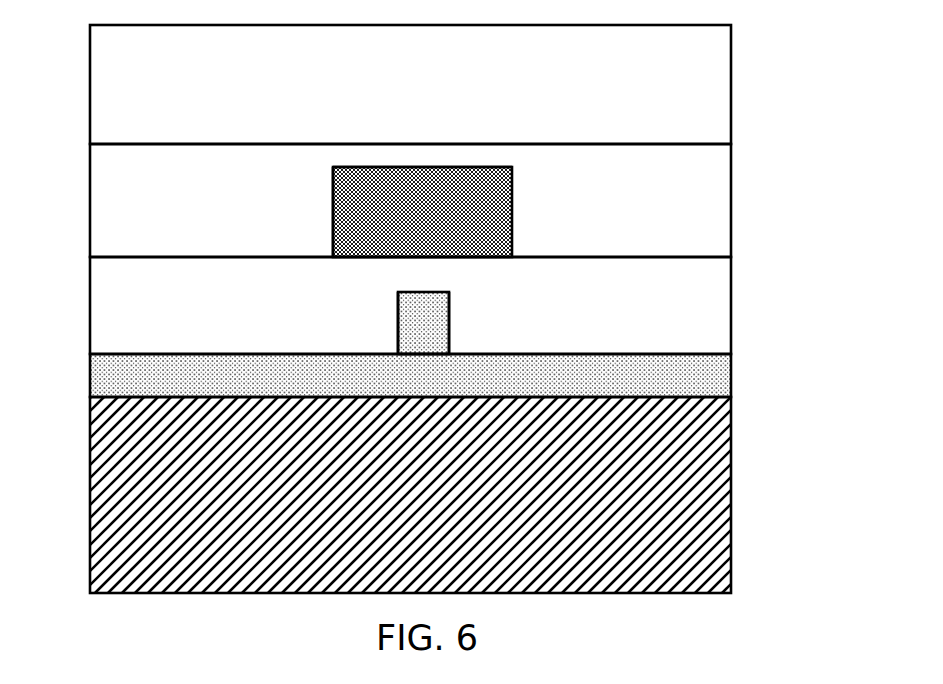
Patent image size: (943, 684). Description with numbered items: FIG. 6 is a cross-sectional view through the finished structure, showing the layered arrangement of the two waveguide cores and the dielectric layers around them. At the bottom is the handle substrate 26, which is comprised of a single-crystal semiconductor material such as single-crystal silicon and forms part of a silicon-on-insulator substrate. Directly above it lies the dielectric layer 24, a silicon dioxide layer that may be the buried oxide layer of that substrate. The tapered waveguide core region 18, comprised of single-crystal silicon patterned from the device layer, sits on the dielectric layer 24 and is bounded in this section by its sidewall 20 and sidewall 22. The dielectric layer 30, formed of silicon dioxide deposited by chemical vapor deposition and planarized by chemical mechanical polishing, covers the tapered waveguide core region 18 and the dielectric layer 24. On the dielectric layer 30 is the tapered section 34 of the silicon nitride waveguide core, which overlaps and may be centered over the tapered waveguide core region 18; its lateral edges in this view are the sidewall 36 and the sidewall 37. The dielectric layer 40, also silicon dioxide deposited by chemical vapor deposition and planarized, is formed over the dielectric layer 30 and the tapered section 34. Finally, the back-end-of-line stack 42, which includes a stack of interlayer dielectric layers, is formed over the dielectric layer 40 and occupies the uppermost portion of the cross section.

The tapered waveguide core region 18 is at (423, 312).
The sidewall 20 is at (398, 331).
The sidewall 22 is at (449, 338).
The dielectric layer 24 is at (687, 376).
The handle substrate 26 is at (118, 513).
The dielectric layer 30 is at (688, 312).
The tapered section 34 is at (482, 215).
The sidewall 36 is at (333, 190).
The sidewall 37 is at (512, 175).
The dielectric layer 40 is at (673, 221).
The back-end-of-line stack 42 is at (668, 87).